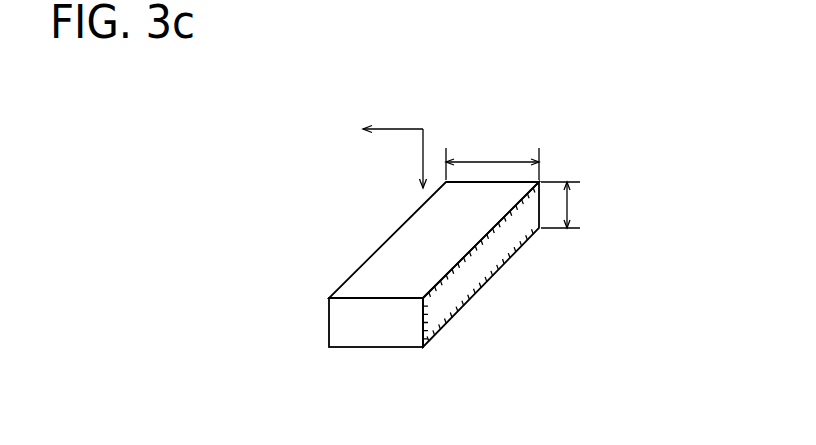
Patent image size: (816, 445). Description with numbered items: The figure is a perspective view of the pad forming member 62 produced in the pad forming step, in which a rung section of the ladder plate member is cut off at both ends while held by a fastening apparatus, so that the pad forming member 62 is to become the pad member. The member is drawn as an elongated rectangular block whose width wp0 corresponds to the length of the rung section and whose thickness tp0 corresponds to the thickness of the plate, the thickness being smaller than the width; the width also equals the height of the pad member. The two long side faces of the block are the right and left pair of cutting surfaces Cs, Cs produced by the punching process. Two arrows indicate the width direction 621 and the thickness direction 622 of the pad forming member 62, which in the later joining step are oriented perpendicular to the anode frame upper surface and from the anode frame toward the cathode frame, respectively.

The pad forming member 62 is at (376, 332).
The width direction 621 is at (400, 129).
The thickness direction 622 is at (423, 148).
The cutting surface Cs is at (348, 277).
The width of the pad forming member wp0 is at (492, 154).
The thickness of the pad forming member tp0 is at (579, 205).